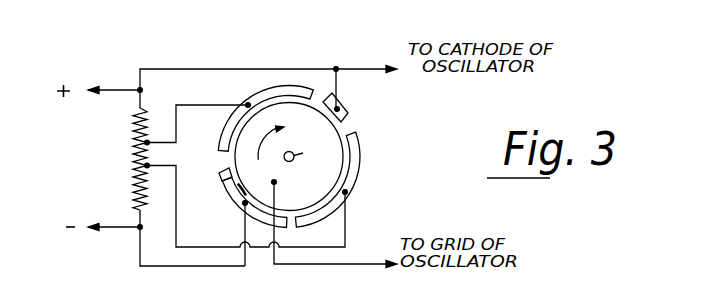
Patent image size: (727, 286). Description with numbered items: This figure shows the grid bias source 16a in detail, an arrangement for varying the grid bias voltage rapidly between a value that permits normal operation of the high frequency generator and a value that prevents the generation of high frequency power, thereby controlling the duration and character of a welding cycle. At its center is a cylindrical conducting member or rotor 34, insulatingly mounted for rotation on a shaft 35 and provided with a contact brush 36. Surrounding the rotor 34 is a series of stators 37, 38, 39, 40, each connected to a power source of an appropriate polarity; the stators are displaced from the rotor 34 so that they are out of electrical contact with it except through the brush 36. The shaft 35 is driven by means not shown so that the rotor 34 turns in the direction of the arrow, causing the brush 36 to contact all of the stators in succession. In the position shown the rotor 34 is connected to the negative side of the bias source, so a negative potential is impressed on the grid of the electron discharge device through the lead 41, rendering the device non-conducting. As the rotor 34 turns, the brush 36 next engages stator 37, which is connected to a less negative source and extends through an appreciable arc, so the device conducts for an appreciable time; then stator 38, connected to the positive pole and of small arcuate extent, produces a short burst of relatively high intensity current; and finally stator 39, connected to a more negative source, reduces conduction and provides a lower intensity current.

The grid bias source 16a is at (258, 60).
The cylindrical conducting member 34 is at (333, 160).
The shaft 35 is at (303, 153).
The contact brush 36 is at (229, 178).
The stator 37 is at (266, 93).
The stator 38 is at (343, 112).
The stator 39 is at (355, 178).
The stator 40 is at (239, 198).
The lead 41 is at (358, 261).